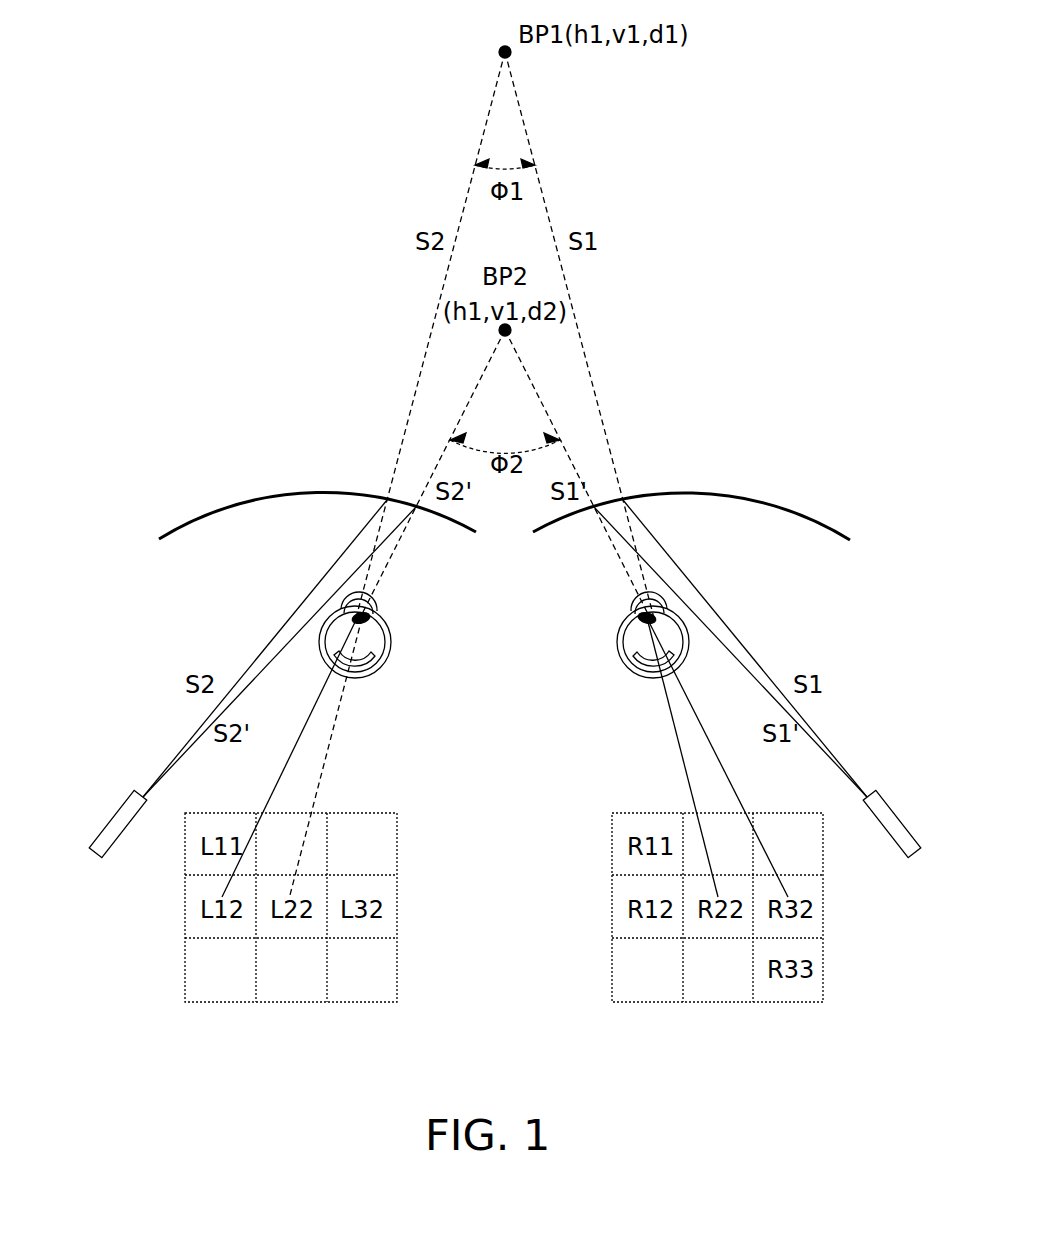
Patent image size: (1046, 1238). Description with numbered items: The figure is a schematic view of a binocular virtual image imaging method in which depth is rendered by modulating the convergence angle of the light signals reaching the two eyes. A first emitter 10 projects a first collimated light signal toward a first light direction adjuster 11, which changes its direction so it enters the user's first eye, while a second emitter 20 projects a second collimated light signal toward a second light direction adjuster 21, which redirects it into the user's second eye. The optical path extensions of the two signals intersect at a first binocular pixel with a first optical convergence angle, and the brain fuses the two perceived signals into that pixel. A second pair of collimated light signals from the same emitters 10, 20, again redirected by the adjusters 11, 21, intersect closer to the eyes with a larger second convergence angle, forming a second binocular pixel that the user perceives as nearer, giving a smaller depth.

The first emitter 10 is at (900, 815).
The first light direction adjuster 11 is at (825, 527).
The second emitter 20 is at (108, 815).
The second light direction adjuster 21 is at (185, 527).